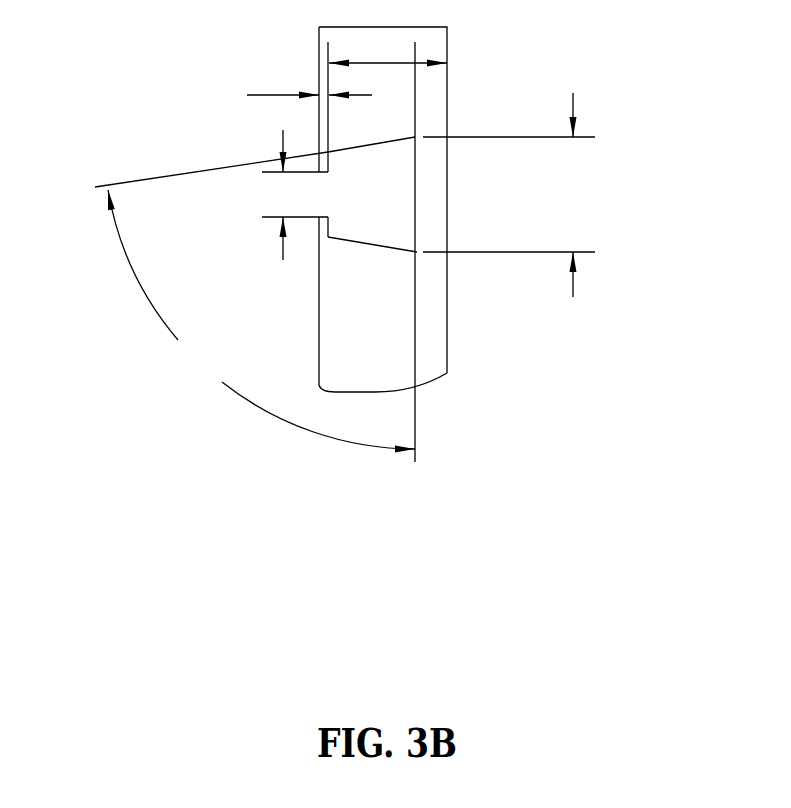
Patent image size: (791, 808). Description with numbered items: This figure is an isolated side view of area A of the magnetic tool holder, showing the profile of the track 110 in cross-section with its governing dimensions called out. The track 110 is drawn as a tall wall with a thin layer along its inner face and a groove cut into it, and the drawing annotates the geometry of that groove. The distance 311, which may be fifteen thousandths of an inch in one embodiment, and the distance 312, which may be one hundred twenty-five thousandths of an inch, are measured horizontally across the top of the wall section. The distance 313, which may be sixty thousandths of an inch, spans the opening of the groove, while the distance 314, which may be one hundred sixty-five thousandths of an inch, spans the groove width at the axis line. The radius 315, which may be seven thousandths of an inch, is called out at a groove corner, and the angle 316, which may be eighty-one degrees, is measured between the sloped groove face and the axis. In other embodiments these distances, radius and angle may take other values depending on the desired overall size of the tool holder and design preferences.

The track 110 is at (320, 197).
The distance 311 is at (282, 101).
The distance 312 is at (423, 72).
The distance 313 is at (283, 260).
The distance 314 is at (509, 195).
The radius 315 is at (331, 176).
The angle 316 is at (255, 302).